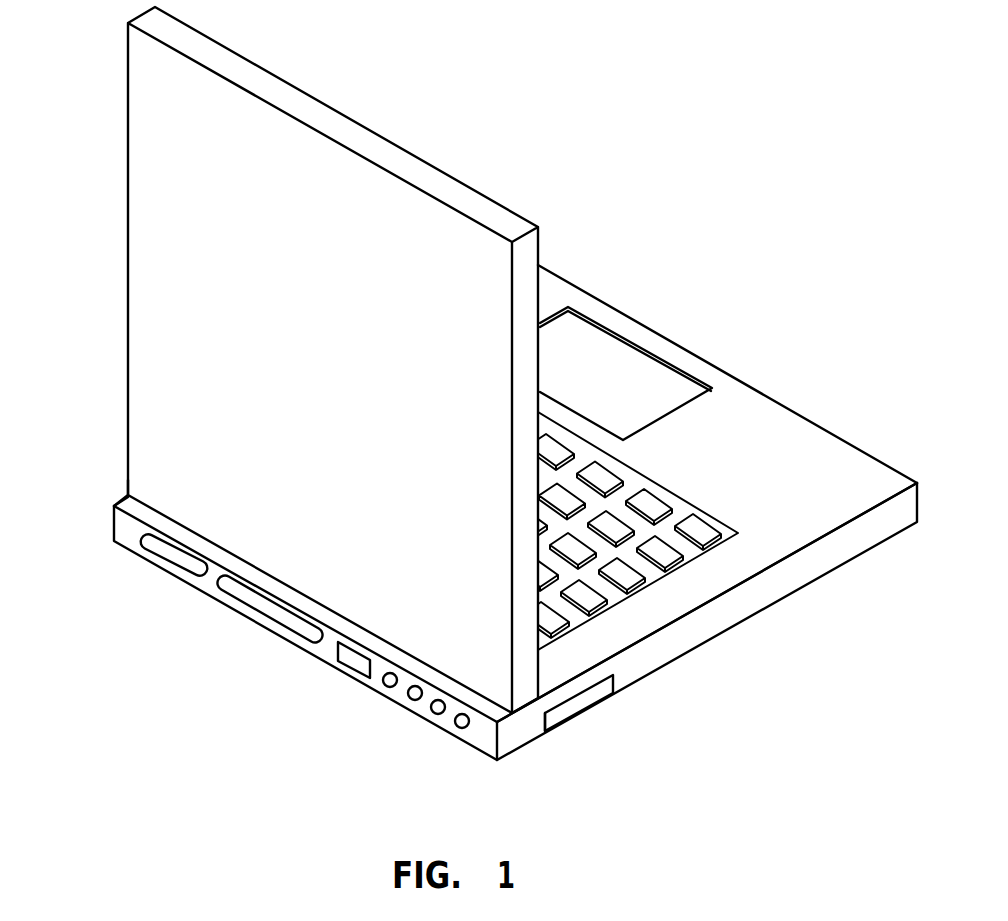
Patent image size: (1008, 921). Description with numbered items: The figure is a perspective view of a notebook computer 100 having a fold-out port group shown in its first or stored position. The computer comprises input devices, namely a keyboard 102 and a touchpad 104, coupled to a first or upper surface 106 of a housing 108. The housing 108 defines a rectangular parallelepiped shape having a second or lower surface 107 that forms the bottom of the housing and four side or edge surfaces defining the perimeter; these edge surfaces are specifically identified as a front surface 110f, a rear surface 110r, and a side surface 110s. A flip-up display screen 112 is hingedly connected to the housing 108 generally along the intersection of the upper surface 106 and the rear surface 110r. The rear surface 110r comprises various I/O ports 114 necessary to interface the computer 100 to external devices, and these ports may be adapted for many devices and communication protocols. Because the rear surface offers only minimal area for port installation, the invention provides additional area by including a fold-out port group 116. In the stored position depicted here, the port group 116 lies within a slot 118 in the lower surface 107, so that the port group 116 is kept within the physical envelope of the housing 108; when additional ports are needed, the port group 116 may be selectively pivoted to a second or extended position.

The notebook computer 100 is at (763, 247).
The keyboard 102 is at (697, 528).
The touchpad 104 is at (655, 373).
The upper surface 106 is at (820, 474).
The lower surface 107 is at (842, 563).
The housing 108 is at (112, 483).
The front surface 110f is at (586, 291).
The rear surface 110r is at (127, 523).
The side surface 110s is at (713, 624).
The flip-up display screen 112 is at (127, 258).
The I/O ports 114 is at (358, 659).
The fold-out port group 116 is at (588, 705).
The slot 118 is at (547, 731).